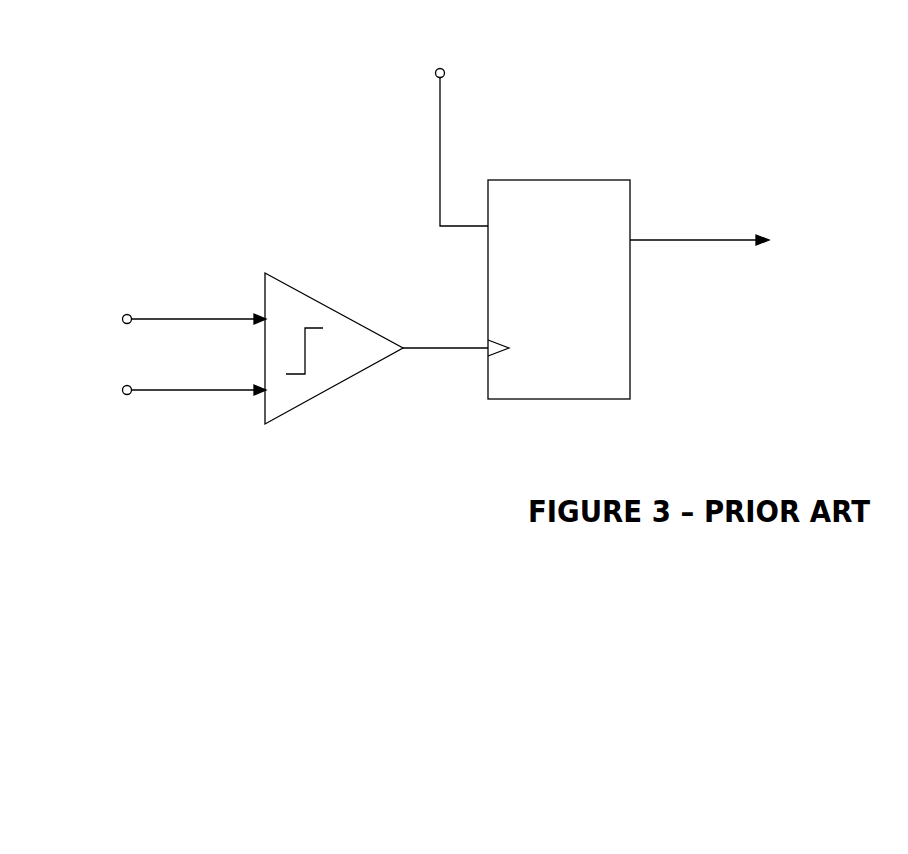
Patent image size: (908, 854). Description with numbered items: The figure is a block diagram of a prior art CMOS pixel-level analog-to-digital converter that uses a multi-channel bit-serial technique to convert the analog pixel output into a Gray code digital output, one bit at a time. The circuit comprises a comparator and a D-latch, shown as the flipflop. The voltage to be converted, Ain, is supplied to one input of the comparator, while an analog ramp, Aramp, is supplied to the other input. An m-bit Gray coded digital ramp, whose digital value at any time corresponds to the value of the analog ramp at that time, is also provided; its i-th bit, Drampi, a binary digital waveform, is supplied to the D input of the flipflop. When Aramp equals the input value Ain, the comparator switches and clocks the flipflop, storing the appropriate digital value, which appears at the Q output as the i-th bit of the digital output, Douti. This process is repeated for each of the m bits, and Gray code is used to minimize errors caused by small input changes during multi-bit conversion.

The element comparator is at (376, 348).
The D-latch flipflop is at (559, 289).
The analog ramp Aramp is at (154, 316).
The voltage to be converted Ain is at (166, 387).
The i-th bit of the digital Gray code ramp Drampi is at (450, 132).
The i-th bit of the digital output Douti is at (715, 266).